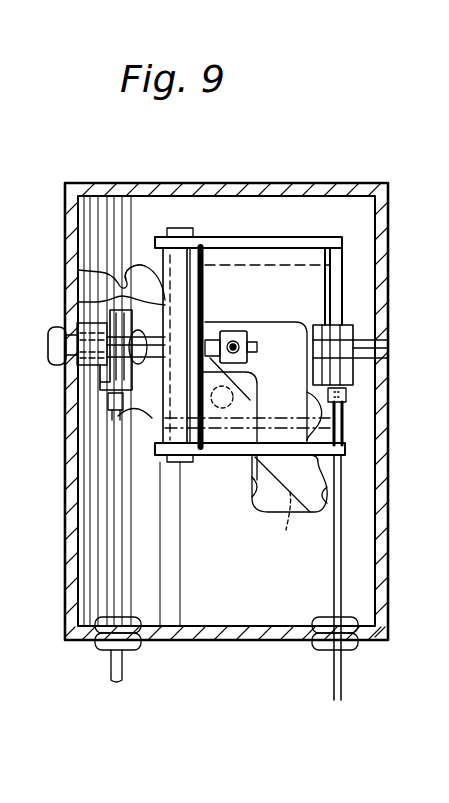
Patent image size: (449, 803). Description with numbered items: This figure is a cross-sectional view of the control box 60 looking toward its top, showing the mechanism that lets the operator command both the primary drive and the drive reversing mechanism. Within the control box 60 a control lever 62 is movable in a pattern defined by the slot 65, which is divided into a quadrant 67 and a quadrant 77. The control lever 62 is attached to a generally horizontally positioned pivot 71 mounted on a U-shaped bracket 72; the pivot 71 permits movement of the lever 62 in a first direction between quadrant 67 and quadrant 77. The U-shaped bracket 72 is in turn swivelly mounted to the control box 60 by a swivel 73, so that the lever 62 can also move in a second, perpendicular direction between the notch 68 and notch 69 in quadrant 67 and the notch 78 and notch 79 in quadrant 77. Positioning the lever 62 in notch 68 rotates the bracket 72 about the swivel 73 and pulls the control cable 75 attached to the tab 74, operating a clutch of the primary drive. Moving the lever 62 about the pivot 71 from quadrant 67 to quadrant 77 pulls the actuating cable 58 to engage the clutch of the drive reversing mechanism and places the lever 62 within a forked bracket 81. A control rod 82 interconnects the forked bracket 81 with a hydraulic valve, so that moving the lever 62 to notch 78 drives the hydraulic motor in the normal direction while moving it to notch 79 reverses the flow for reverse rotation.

The control box 60 is at (220, 183).
The quadrant 77 is at (133, 260).
The U-shaped bracket 72 is at (235, 238).
The pivot 71 is at (197, 304).
The cable 58 is at (235, 331).
The swivel 73 is at (353, 325).
The notch 79 is at (100, 271).
The forked bracket 81 is at (100, 302).
The control lever 62 is at (62, 366).
The notch 78 is at (150, 418).
The tab 74 is at (308, 377).
The notch 69 is at (342, 418).
The quadrant 67 is at (249, 462).
The slot 65 is at (253, 496).
The notch 68 is at (318, 514).
The control cable 75 is at (330, 580).
The control rod 82 is at (122, 665).